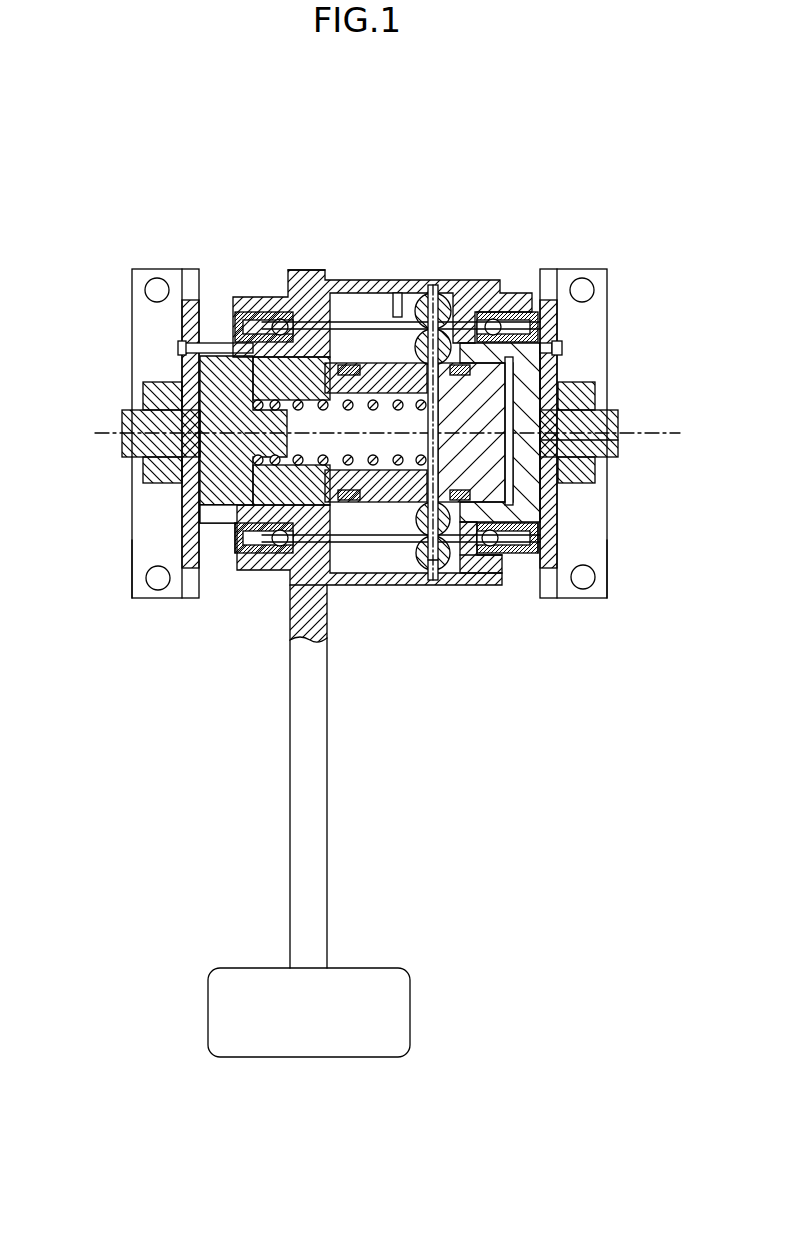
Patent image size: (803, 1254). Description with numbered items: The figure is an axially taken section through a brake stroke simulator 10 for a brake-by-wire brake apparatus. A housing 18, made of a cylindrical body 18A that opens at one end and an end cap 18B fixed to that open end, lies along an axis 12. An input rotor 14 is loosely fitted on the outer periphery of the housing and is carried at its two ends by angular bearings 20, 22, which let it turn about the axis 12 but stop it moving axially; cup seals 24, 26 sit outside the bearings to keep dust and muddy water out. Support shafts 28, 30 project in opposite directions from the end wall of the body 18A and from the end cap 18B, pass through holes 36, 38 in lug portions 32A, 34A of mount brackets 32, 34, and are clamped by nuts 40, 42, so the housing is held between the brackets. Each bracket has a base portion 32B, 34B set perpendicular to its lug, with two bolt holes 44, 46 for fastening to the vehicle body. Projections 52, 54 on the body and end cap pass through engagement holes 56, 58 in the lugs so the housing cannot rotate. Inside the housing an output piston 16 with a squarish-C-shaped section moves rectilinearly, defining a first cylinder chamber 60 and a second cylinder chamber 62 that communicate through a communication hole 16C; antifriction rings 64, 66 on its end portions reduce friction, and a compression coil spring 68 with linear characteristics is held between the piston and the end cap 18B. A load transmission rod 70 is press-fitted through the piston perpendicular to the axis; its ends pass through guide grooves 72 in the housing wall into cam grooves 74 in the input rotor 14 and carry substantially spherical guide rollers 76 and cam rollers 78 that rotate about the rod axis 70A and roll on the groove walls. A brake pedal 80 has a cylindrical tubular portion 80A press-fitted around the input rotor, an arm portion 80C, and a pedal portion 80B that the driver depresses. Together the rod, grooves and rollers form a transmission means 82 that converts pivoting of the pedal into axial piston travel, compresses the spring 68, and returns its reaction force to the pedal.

The brake stroke simulator 10 is at (503, 272).
The axis 12 is at (680, 433).
The input rotor 14 is at (327, 605).
The output piston 16 is at (556, 497).
The communication hole 16C is at (447, 492).
The housing 18 is at (352, 318).
The body 18A is at (338, 522).
The end cap 18B is at (207, 498).
The angular bearing 20 is at (492, 543).
The angular bearing 22 is at (282, 547).
The cup seal 24 is at (548, 545).
The cup seal 26 is at (232, 543).
The support shaft 28 is at (612, 423).
The support shaft 30 is at (122, 428).
The mount bracket 32 is at (607, 285).
The lug portion 32A is at (551, 590).
The base portion 32B is at (607, 563).
The mount bracket 34 is at (132, 290).
The lug portion 34A is at (191, 270).
The base portion 34B is at (140, 543).
The hole 36 is at (565, 443).
The hole 38 is at (153, 443).
The nut 40 is at (590, 383).
The nut 42 is at (148, 385).
The bolt hole 44 is at (581, 280).
The bolt hole 46 is at (153, 280).
The projection 52 is at (563, 348).
The projection 54 is at (190, 352).
The engagement hole 56 is at (560, 343).
The engagement hole 58 is at (178, 345).
The first cylinder chamber 60 is at (560, 475).
The second cylinder chamber 62 is at (267, 375).
The antifriction ring 64 is at (461, 368).
The antifriction ring 66 is at (348, 372).
The compression coil spring 68 is at (258, 400).
The load transmission rod 70 is at (443, 393).
The axis of load transmission rod 70A is at (433, 283).
The guide groove 72 is at (362, 350).
The cam groove 74 is at (398, 305).
The guide roller 76 is at (415, 530).
The cam roller 78 is at (450, 525).
The brake pedal 80 is at (360, 806).
The cylindrical tubular portion 80A is at (494, 578).
The pedal portion 80B is at (362, 975).
The arm portion 80C is at (297, 721).
The transmission means 82 is at (443, 595).